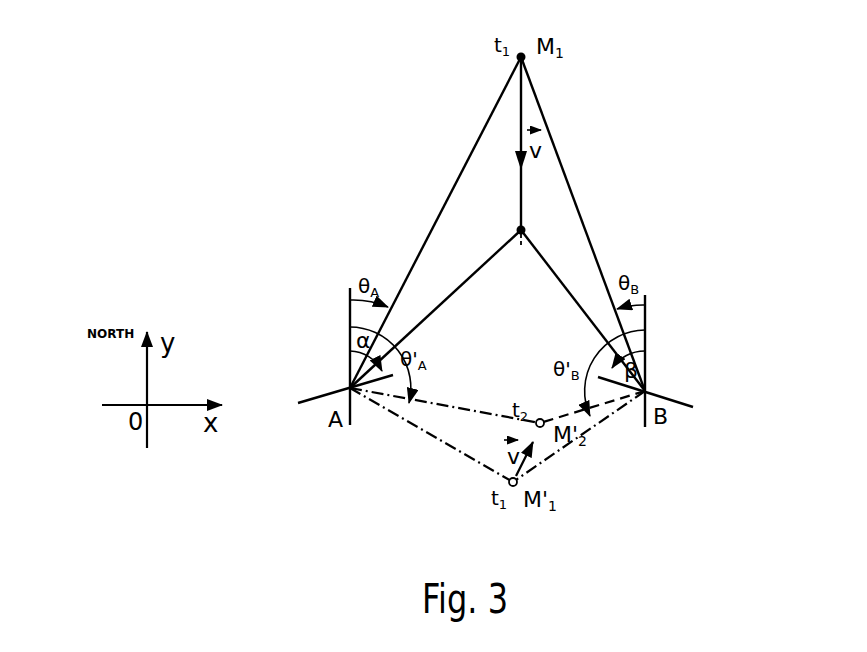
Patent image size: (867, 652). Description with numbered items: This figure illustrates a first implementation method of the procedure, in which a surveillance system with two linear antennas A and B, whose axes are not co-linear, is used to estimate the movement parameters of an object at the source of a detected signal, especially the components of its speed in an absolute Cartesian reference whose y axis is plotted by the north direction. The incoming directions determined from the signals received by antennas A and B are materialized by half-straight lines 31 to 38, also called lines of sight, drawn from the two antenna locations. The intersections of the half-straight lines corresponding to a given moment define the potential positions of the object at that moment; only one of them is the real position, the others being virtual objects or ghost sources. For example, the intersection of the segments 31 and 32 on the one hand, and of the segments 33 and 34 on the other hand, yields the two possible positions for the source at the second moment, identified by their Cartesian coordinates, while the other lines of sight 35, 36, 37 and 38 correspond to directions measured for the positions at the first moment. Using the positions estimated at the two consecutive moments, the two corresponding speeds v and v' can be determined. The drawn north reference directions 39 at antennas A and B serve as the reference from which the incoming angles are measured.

The half-straight line 31 is at (470, 156).
The half-straight line 32 is at (557, 147).
The half-straight line 33 is at (435, 438).
The half-straight line 34 is at (565, 447).
The half-straight line 35 is at (485, 265).
The half-straight line 36 is at (572, 296).
The half-straight line 37 is at (467, 412).
The half-straight line 38 is at (613, 412).
The north reference direction at stations A and B 39 is at (350, 306).